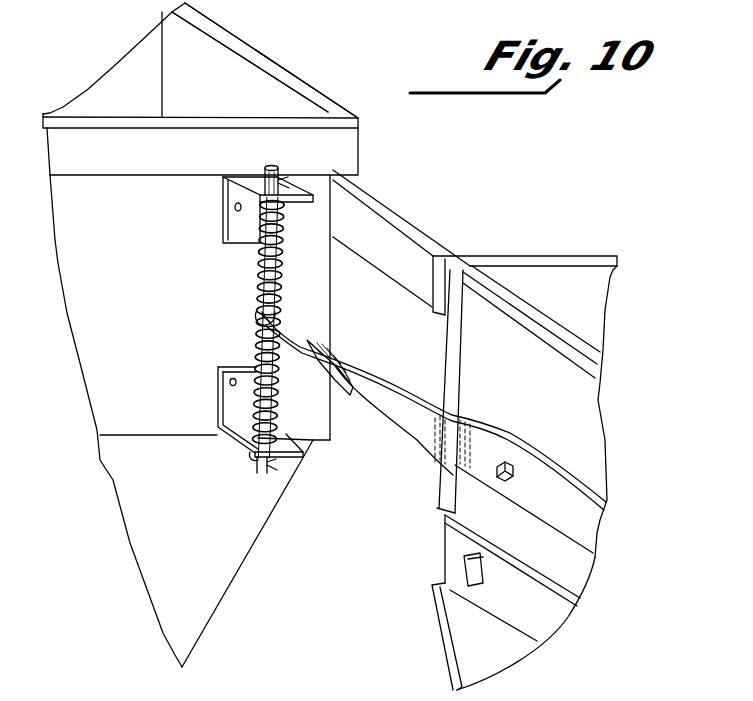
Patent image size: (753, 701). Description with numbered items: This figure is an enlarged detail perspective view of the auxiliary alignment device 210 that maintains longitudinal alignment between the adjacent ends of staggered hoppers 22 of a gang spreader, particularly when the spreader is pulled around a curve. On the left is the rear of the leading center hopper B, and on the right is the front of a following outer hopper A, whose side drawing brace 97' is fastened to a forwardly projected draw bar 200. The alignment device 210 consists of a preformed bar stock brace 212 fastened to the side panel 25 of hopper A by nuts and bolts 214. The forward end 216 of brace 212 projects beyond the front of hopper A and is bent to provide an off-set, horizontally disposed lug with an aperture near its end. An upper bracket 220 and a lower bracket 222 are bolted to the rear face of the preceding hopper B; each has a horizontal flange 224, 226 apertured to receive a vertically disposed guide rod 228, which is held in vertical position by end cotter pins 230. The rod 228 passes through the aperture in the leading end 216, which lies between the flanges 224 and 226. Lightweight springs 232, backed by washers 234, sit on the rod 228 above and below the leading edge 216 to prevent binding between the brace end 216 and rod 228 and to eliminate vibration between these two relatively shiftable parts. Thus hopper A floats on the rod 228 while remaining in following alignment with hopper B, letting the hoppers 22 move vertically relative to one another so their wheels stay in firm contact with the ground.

The hopper 22 is at (295, 98).
The side panel 25 is at (553, 342).
The side drawing brace 97' is at (444, 567).
The draw bar 200 is at (432, 214).
The auxiliary alignment device 210 is at (378, 447).
The bar stock brace 212 is at (403, 390).
The nuts and bolts 214 is at (513, 467).
The forward end 216 is at (330, 346).
The upper bracket 220 is at (232, 194).
The lower bracket 222 is at (228, 410).
The horizontal flange 224 is at (296, 193).
The horizontal flange 226 is at (288, 445).
The guide rod 228 is at (258, 265).
The cotter pin 230 is at (280, 148).
The lightweight spring 232 is at (258, 272).
The washer 234 is at (276, 320).
The hopper A is at (575, 250).
The hopper B is at (258, 74).